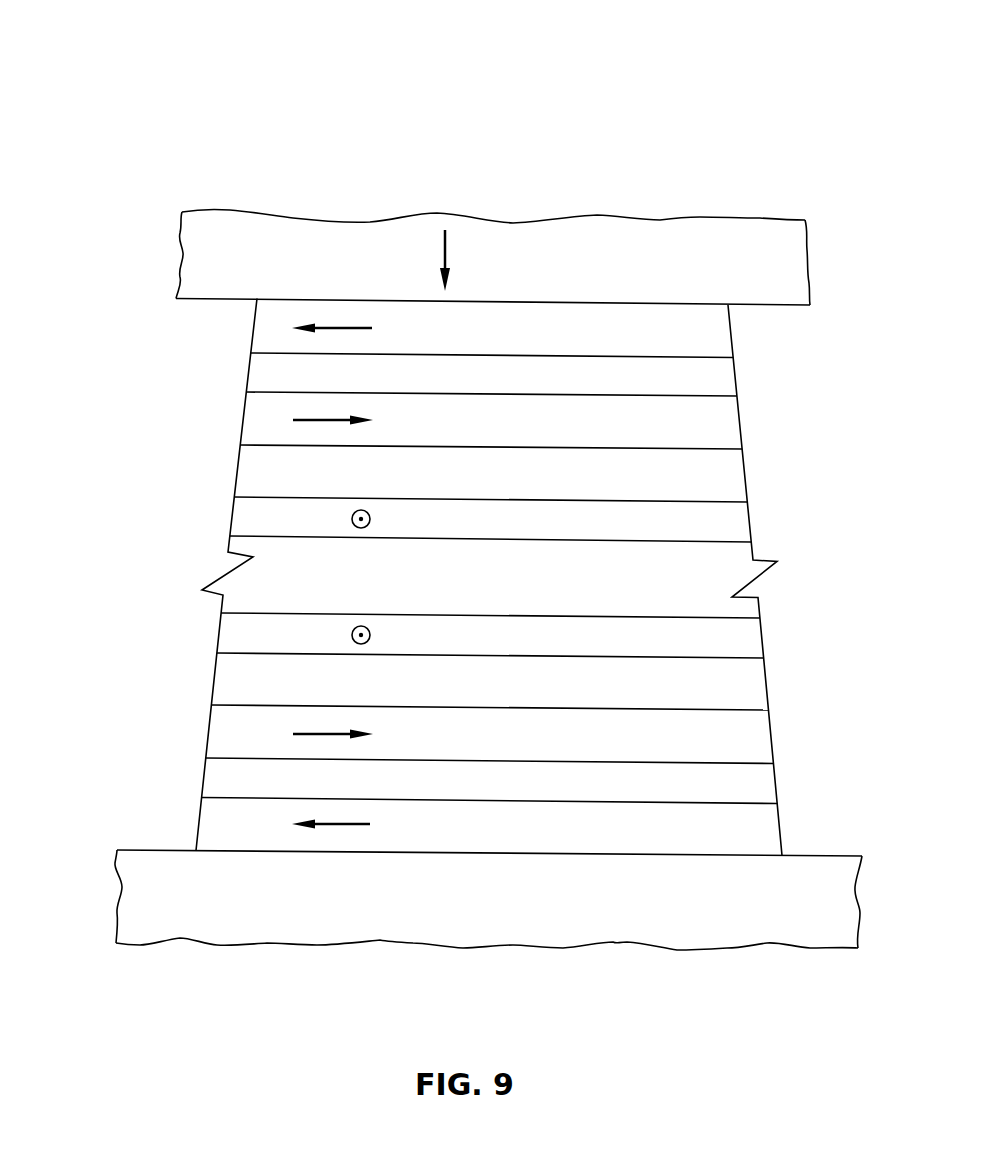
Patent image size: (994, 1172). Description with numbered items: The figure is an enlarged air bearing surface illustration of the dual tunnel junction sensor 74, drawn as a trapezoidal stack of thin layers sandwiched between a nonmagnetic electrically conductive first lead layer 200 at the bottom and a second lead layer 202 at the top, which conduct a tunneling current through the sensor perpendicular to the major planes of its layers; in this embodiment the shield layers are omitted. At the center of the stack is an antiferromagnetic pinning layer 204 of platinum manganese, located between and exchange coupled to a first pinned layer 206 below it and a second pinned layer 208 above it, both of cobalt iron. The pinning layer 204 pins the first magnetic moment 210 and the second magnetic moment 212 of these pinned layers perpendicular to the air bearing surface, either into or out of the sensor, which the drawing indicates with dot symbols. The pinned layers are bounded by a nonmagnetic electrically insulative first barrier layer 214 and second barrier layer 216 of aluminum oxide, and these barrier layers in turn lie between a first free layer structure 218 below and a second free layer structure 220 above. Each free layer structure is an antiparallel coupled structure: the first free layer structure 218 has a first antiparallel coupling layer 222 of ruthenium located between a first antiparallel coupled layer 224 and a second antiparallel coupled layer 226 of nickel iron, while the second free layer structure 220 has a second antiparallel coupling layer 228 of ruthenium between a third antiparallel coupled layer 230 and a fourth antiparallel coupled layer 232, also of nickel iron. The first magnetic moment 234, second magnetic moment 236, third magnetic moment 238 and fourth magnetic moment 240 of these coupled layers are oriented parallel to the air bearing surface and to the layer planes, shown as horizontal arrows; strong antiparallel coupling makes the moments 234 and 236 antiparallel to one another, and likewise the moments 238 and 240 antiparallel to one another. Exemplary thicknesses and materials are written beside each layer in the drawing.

The dual tunnel junction sensor 74 is at (18, 298).
The first lead layer 200 is at (818, 937).
The second lead layer 202 is at (701, 224).
The antiferromagnetic pinning layer 204 is at (758, 605).
The first pinned layer 206 is at (763, 644).
The second pinned layer 208 is at (753, 520).
The first magnetic moment 210 is at (352, 634).
The second magnetic moment 212 is at (352, 518).
The first barrier layer 214 is at (767, 687).
The second barrier layer 216 is at (742, 472).
The first free layer structure 218 is at (73, 707).
The second free layer structure 220 is at (125, 445).
The first antiparallel coupling layer 222 is at (775, 782).
The first antiparallel coupled layer 224 is at (779, 828).
The second antiparallel coupled layer 226 is at (771, 730).
The second antiparallel coupling layer 228 is at (733, 372).
The third antiparallel coupled layer 230 is at (737, 418).
The fourth antiparallel coupled layer 232 is at (730, 327).
The first magnetic moment 234 is at (342, 826).
The second magnetic moment 236 is at (316, 733).
The third magnetic moment 238 is at (322, 421).
The fourth magnetic moment 240 is at (343, 327).